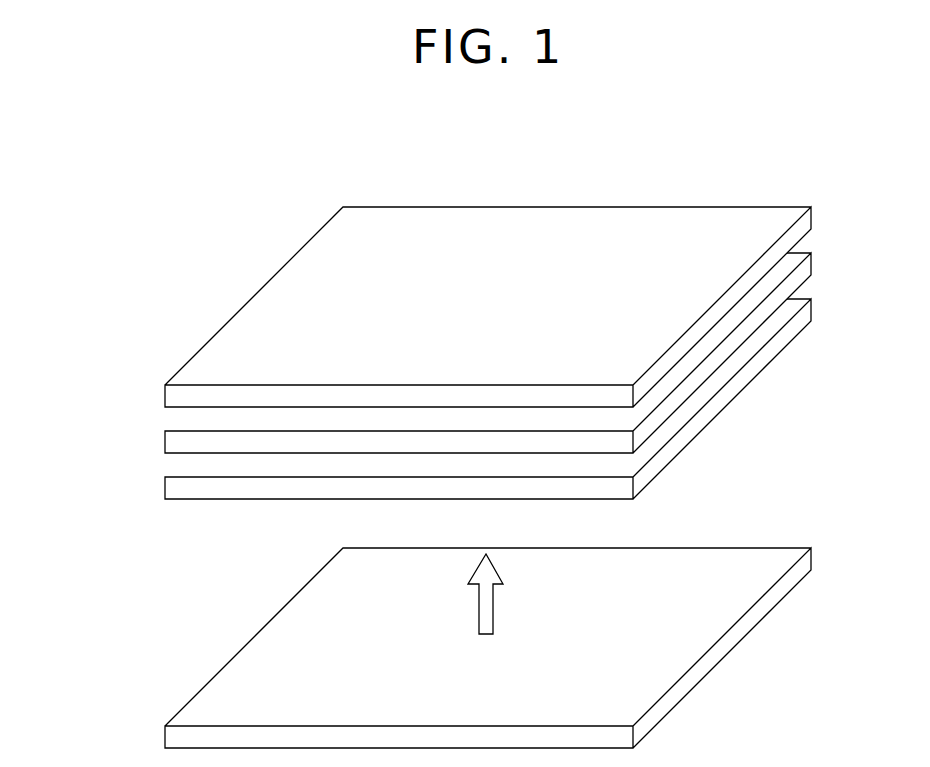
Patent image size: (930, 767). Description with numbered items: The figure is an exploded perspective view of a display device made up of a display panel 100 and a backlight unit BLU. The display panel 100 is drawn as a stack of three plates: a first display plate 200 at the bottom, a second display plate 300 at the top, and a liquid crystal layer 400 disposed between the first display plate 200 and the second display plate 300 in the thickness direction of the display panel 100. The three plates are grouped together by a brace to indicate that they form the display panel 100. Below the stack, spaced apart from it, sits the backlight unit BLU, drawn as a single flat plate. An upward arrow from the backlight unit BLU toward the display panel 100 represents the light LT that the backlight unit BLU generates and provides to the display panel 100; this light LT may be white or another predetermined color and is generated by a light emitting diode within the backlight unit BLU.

The display panel 100 is at (84, 383).
The second display plate 300 is at (166, 393).
The liquid crystal layer 400 is at (166, 438).
The first display plate 200 is at (166, 485).
The backlight unit BLU is at (166, 733).
The light LT is at (485, 611).